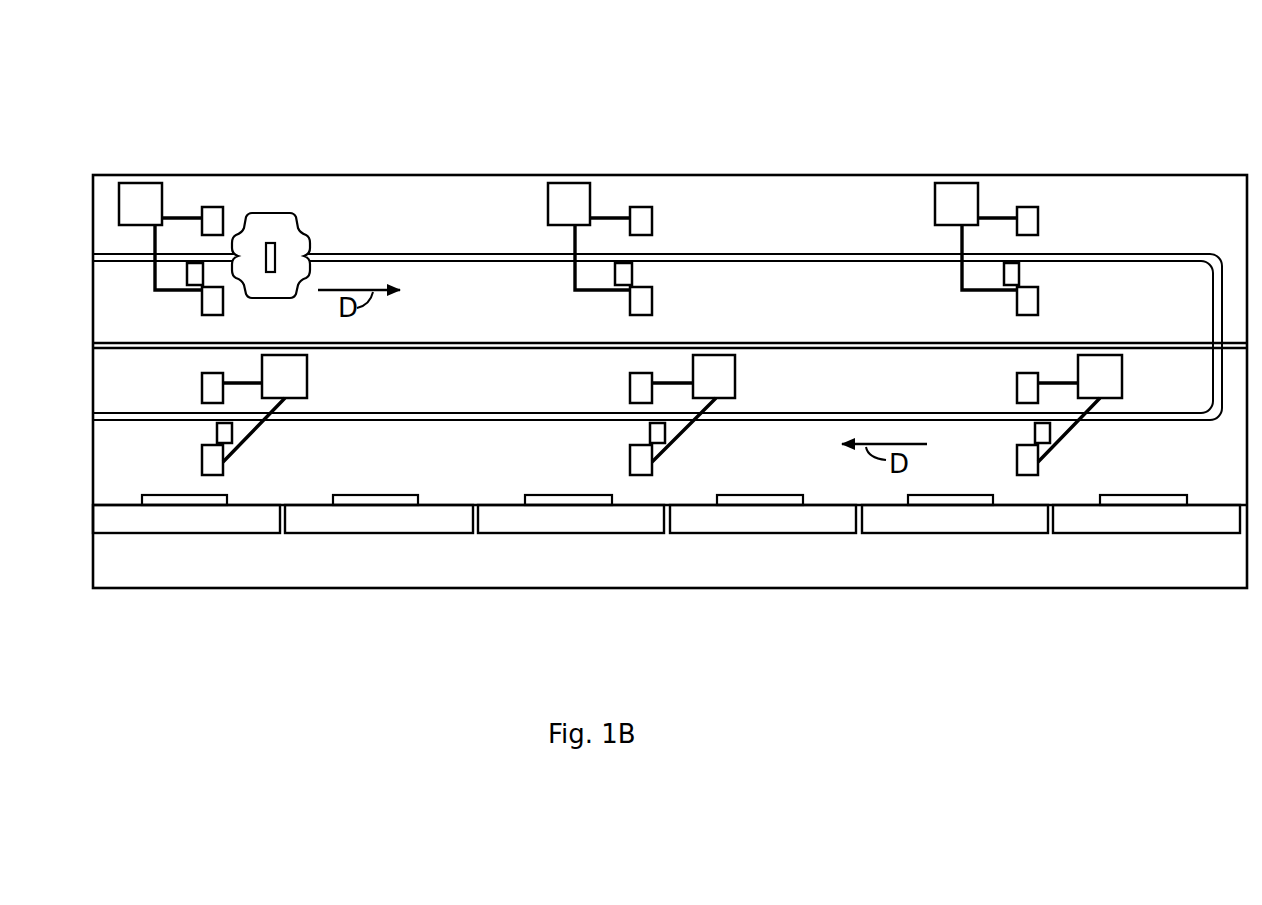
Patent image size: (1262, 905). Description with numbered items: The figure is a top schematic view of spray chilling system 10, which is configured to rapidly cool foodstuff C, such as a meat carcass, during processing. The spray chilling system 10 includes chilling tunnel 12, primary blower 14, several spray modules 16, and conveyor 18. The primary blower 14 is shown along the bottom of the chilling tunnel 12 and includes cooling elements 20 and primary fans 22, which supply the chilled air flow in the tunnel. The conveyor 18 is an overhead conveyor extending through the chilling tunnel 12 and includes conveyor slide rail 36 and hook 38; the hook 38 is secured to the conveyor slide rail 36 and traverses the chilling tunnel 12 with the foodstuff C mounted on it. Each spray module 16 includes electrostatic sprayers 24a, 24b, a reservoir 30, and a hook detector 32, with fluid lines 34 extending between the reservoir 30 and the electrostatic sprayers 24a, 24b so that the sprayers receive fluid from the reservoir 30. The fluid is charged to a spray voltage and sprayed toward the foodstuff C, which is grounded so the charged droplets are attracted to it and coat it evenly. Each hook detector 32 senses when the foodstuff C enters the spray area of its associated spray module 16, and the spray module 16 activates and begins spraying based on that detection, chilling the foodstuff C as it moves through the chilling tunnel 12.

The spray chilling system 10 is at (506, 102).
The chilling tunnel 12 is at (433, 206).
The primary blower 14 is at (628, 548).
The spray module 16 is at (228, 190).
The conveyor 18 is at (836, 250).
The cooling element 20 is at (347, 520).
The primary fan 22 is at (357, 502).
The electrostatic sprayer 24a is at (218, 301).
The electrostatic sprayer 24b is at (207, 212).
The reservoir 30 is at (620, 290).
The hook detector 32 is at (196, 278).
The fluid line 34 is at (152, 280).
The conveyor slide rail 36 is at (450, 262).
The hook 38 is at (278, 250).
The foodstuff C is at (280, 213).